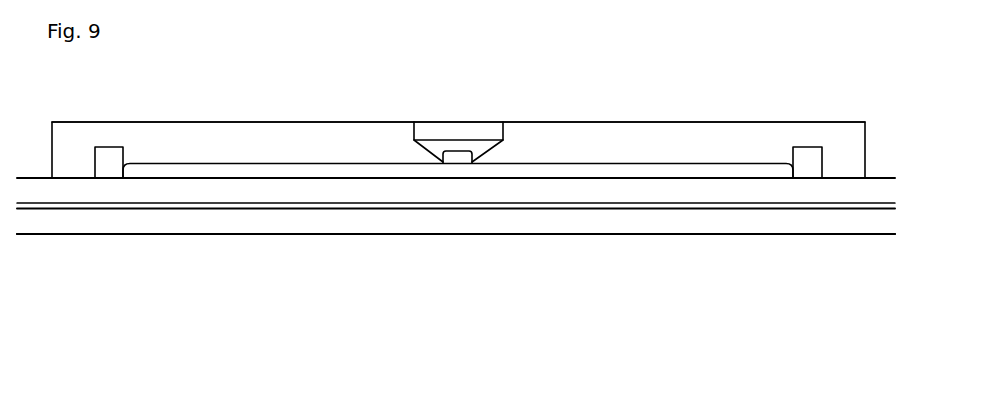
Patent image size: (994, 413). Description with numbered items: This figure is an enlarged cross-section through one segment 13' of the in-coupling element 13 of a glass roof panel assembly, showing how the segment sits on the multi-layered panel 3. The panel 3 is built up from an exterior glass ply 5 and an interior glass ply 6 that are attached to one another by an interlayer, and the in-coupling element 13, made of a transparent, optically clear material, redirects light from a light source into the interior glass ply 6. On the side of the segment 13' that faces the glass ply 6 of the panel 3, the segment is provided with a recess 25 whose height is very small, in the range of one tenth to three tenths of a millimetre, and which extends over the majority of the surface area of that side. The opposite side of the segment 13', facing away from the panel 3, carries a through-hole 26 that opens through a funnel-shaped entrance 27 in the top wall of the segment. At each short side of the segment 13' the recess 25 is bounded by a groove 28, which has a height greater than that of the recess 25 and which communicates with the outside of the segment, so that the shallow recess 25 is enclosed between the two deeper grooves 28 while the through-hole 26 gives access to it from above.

The panel 3 is at (658, 268).
The exterior glass ply 5 is at (238, 225).
The interior glass ply 6 is at (307, 190).
The in-coupling element 13 is at (458, 95).
The segment 13' is at (458, 88).
The recess 25 is at (233, 168).
The through-hole 26 is at (458, 162).
The funnel-shaped entrance 27 is at (430, 130).
The groove 28 is at (108, 168).